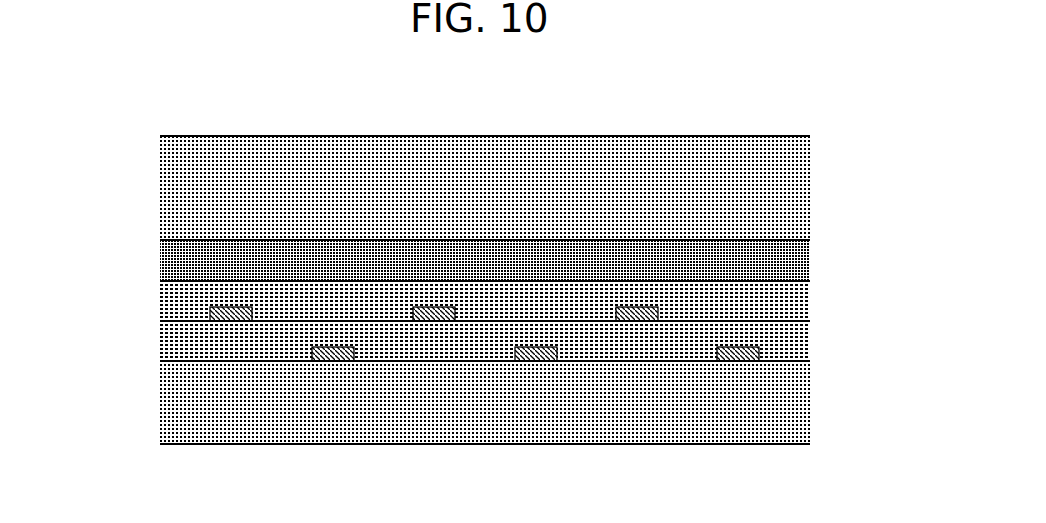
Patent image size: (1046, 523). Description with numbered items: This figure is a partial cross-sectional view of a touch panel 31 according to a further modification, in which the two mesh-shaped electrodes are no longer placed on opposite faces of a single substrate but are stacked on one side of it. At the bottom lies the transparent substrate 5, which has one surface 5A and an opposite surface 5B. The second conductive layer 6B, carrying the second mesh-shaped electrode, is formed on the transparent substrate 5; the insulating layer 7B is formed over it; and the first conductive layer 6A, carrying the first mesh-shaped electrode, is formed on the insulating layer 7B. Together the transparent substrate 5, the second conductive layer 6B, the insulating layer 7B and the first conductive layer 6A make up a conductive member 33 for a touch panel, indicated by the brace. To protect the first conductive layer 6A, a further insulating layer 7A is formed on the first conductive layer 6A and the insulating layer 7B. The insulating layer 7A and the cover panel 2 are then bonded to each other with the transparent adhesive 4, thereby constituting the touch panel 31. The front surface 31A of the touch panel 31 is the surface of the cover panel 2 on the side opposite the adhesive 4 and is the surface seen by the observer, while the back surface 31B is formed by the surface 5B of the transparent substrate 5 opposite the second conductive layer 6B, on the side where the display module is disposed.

The cover panel 2 is at (175, 195).
The transparent adhesive 4 is at (175, 258).
The transparent substrate 5 is at (175, 410).
The one surface of the transparent substrate 5A is at (488, 361).
The other surface of the transparent substrate 5B is at (507, 444).
The first conductive layer 6A is at (232, 307).
The second conductive layer 6B is at (333, 361).
The insulating layer 7A is at (175, 302).
The insulating layer 7B is at (175, 345).
The touch panel 31 is at (481, 279).
The front surface of the touch panel 31A is at (645, 136).
The back surface of the touch panel 31B is at (650, 444).
The conductive member for a touch panel 33 is at (481, 294).